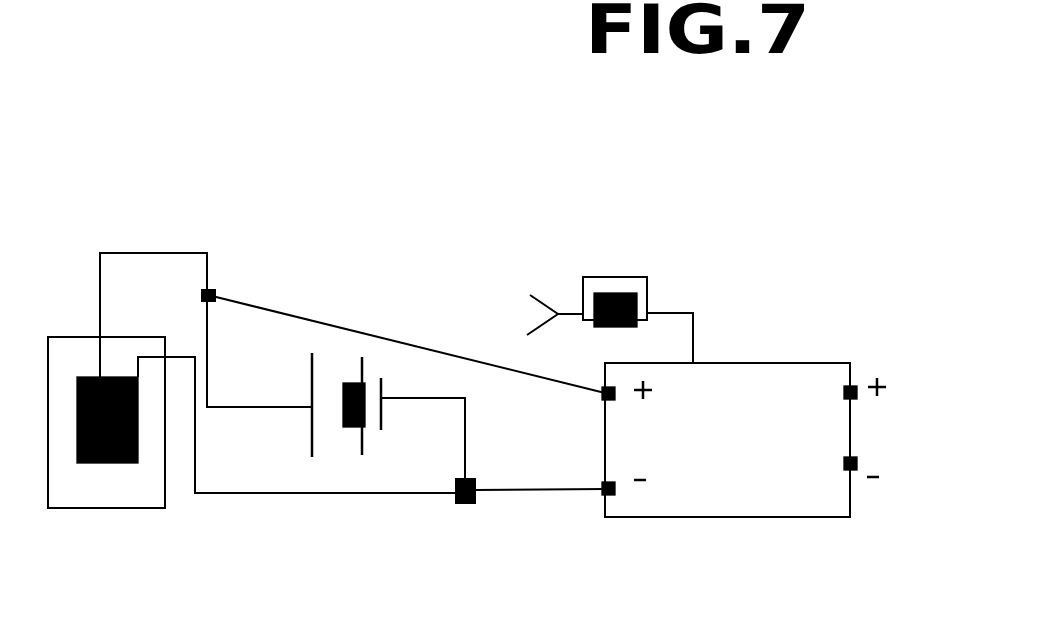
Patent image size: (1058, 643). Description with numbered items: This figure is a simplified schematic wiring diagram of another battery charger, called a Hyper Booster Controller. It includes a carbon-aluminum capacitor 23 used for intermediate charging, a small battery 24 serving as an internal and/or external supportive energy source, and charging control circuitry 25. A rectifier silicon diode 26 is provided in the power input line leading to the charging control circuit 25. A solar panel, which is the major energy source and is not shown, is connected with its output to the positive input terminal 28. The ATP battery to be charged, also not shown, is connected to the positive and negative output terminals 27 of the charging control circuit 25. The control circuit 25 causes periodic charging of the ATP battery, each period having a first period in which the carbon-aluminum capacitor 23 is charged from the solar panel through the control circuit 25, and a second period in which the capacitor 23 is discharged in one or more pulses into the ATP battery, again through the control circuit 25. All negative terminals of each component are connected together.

The carbon-aluminum capacitor 23 is at (124, 486).
The small battery 24 is at (344, 364).
The charging control circuitry 25 is at (771, 385).
The rectifier silicon diode 26 is at (599, 245).
The positive and negative output terminals 27 is at (869, 445).
The positive input terminal 28 is at (506, 305).